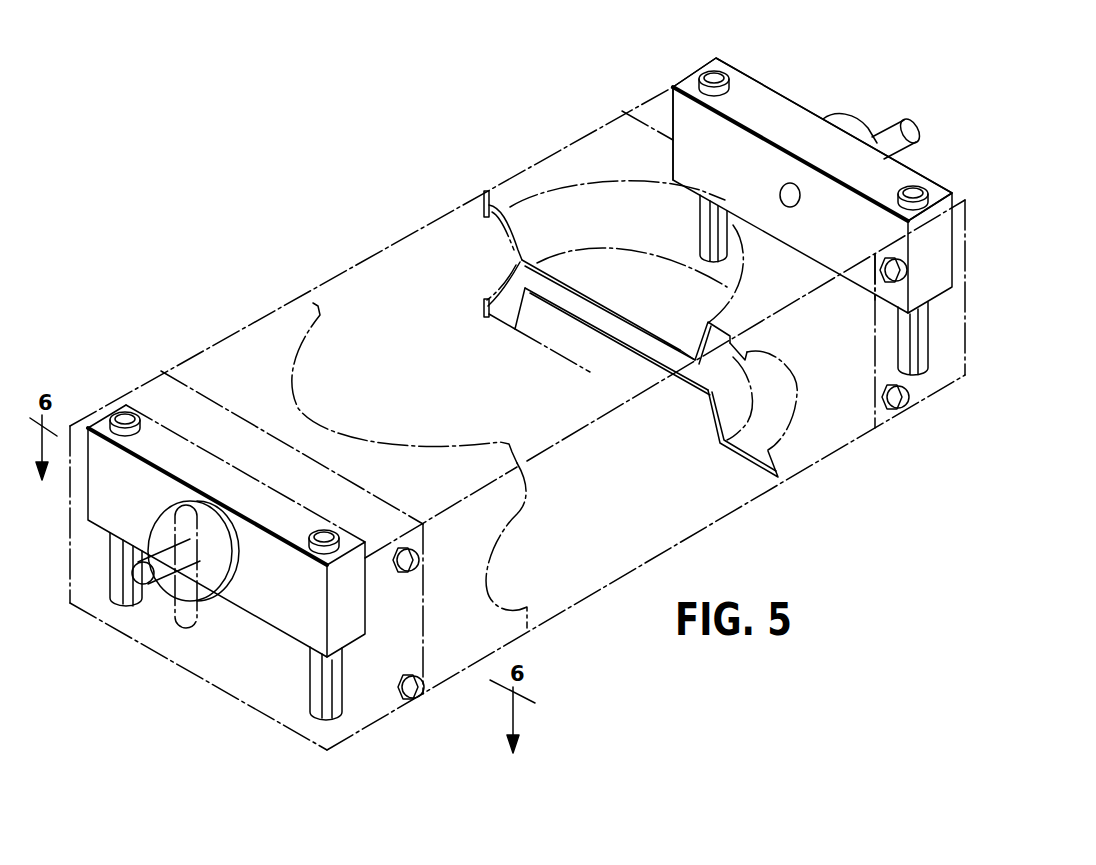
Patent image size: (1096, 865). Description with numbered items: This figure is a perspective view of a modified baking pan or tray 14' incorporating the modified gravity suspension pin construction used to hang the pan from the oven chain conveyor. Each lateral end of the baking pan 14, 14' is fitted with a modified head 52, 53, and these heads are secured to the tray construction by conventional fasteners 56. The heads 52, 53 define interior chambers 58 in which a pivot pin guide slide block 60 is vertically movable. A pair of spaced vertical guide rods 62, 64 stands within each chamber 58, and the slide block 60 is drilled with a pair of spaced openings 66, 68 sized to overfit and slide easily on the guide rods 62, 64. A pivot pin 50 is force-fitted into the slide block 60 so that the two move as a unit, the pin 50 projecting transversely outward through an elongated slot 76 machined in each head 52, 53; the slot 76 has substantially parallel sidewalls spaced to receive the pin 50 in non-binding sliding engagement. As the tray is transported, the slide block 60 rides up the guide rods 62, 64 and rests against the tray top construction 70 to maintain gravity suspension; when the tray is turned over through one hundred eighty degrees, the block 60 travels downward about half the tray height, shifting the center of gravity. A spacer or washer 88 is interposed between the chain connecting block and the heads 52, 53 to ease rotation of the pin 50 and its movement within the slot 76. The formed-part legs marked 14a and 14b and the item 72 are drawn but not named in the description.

The baking pan 14 is at (612, 197).
The first leg of strip 14a is at (508, 164).
The second leg of strip 14b is at (686, 182).
The modified baking pan 14' is at (523, 433).
The pivot pin 50 is at (142, 562).
The head 52 is at (183, 672).
The head 53 is at (758, 73).
The fasteners 56 is at (418, 580).
The interior chamber 58 is at (378, 708).
The slide block 60 is at (226, 452).
The guide rod 62 is at (126, 412).
The guide rod 64 is at (334, 534).
The opening 66 is at (680, 86).
The opening 68 is at (900, 202).
The tray top construction 70 is at (632, 100).
The side plate 72 is at (836, 452).
The slot 76 is at (196, 625).
The spacer or washer 88 is at (218, 572).